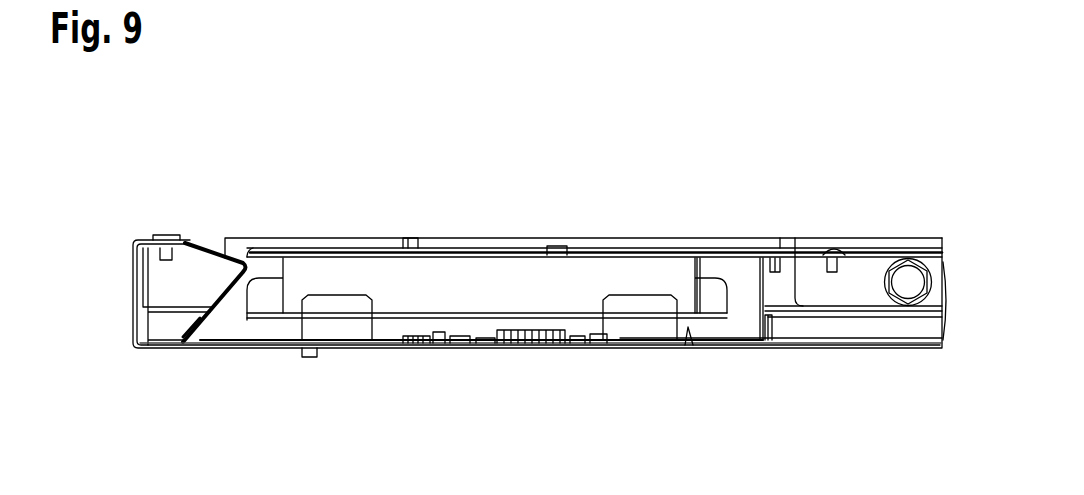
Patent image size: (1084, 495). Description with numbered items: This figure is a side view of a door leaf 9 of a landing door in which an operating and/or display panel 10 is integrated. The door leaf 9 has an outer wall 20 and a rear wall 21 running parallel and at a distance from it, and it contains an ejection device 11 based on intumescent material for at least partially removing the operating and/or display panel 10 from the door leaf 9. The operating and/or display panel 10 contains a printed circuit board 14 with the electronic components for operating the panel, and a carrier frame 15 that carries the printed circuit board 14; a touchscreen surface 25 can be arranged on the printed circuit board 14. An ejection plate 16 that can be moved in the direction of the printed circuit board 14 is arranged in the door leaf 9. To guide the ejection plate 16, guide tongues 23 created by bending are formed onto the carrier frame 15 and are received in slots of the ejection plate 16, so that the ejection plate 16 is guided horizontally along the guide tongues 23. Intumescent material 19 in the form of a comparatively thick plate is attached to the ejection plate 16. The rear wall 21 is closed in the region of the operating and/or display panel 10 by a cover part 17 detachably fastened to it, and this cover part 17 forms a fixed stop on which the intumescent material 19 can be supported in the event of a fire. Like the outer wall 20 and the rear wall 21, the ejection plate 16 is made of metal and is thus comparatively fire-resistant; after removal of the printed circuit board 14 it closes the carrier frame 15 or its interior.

The door leaf 9 is at (124, 271).
The operating and/or display panel 10 is at (358, 362).
The ejection device 11 is at (319, 244).
The printed circuit board 14 is at (407, 330).
The carrier frame 15 is at (688, 329).
The ejection plate 16 is at (722, 297).
The cover part 17 is at (518, 258).
The intumescent material 19 is at (452, 277).
The outer wall 20 is at (858, 345).
The rear wall 21 is at (853, 255).
The guide tongues 23 is at (633, 330).
The touchscreen surface 25 is at (502, 350).